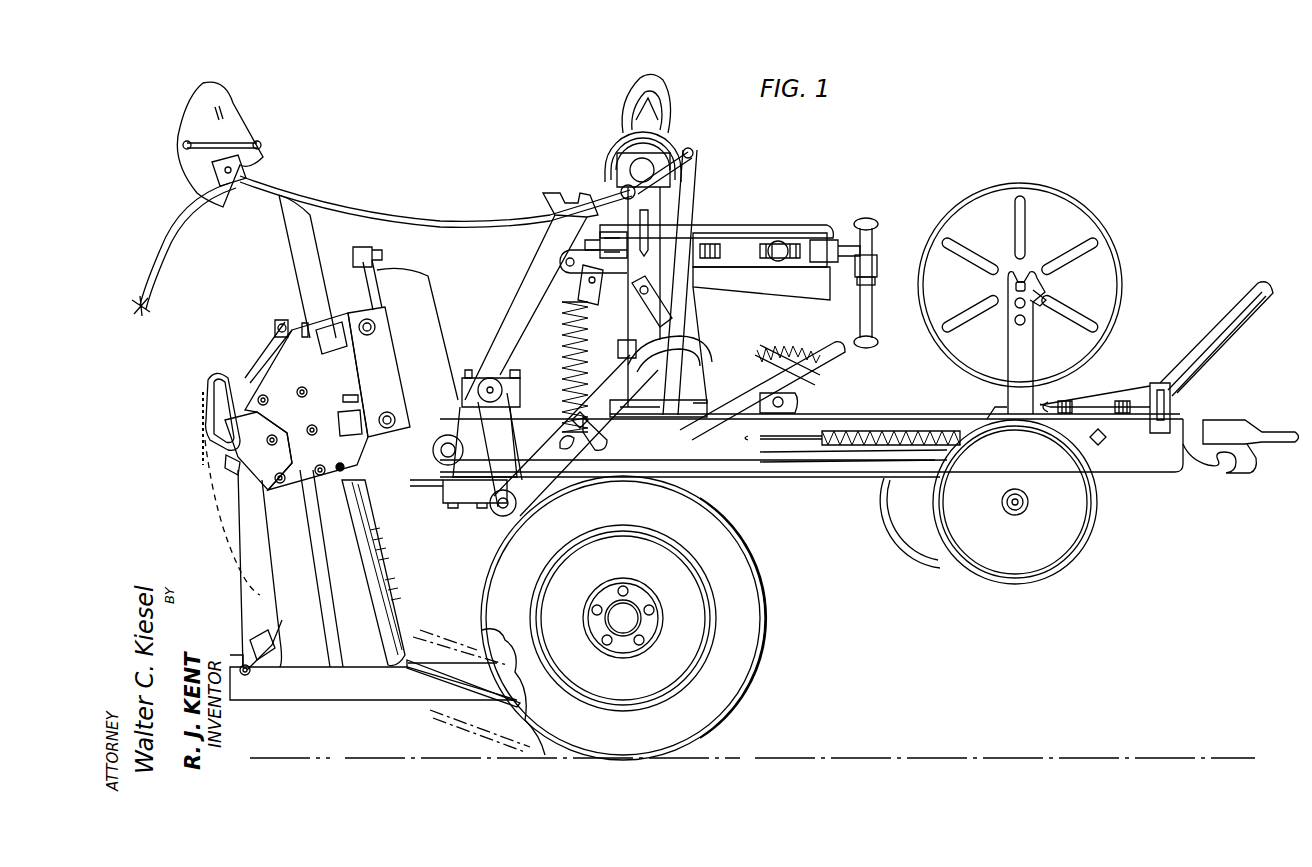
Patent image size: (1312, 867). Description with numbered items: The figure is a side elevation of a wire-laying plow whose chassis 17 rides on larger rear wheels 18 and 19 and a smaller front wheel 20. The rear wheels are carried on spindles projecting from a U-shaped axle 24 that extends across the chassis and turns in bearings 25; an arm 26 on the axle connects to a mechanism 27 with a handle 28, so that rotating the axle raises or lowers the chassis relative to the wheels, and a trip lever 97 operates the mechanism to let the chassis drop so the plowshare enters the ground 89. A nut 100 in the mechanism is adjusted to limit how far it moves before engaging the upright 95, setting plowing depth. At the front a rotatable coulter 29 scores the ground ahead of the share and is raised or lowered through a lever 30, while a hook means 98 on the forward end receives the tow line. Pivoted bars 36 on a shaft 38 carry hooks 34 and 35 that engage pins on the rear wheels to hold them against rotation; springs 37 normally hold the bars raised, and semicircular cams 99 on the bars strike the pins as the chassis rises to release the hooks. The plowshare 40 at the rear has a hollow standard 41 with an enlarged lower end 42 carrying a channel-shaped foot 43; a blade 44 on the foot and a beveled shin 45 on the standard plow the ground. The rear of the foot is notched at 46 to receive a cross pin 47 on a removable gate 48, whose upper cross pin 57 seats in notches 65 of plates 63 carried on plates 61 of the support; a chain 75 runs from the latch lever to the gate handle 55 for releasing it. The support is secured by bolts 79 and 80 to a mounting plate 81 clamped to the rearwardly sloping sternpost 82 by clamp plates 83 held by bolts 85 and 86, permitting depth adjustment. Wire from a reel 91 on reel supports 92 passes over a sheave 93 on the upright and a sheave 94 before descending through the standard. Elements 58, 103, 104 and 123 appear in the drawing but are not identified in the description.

The chassis 17 is at (836, 490).
The rear wheel 18 is at (745, 628).
The rear wheel 19 is at (520, 708).
The front wheel 20 is at (1013, 577).
The U-shaped axle 24 is at (490, 378).
The bearings 25 is at (466, 378).
The arm 26 is at (548, 290).
The mechanism 27 is at (775, 292).
The handle 28 is at (866, 228).
The coulter 29 is at (938, 560).
The lever 30 is at (820, 358).
The hook 34 is at (653, 373).
The hook 35 is at (705, 360).
The bar 36 is at (605, 398).
The spring 37 is at (568, 355).
The shaft 38 is at (498, 512).
The plowshare 40 is at (382, 549).
The hollow standard 41 is at (265, 515).
The enlarged lower end 42 is at (312, 690).
The foot 43 is at (392, 700).
The blade 44 is at (440, 648).
The beveled shin 45 is at (385, 585).
The notch 46 is at (252, 673).
The cross pin 47 is at (262, 662).
The removable gate 48 is at (290, 552).
The handle 55 is at (218, 373).
The cross pin 57 is at (250, 456).
The block 58 is at (258, 632).
The plate 61 is at (302, 322).
The plate 63 is at (258, 478).
The notch 65 is at (240, 462).
The chain 75 is at (203, 410).
The bolt 79 is at (325, 345).
The bolt 80 is at (345, 438).
The mounting plate 81 is at (340, 318).
The sternpost 82 is at (360, 248).
The clamp plate 83 is at (385, 358).
The bolt 85 is at (378, 326).
The bolt 86 is at (394, 414).
The ground 89 is at (843, 757).
The reel 91 is at (1088, 238).
The reel support 92 is at (1010, 360).
The sheave 93 is at (688, 150).
The sheave 94 is at (265, 165).
The upright 95 is at (660, 205).
The trip lever 97 is at (690, 182).
The hook means 98 is at (1255, 448).
The semicircular cam 99 is at (596, 448).
The nut 100 is at (779, 250).
The lever 103 is at (1211, 318).
The lever handle 104 is at (1225, 340).
The spring 123 is at (1066, 406).